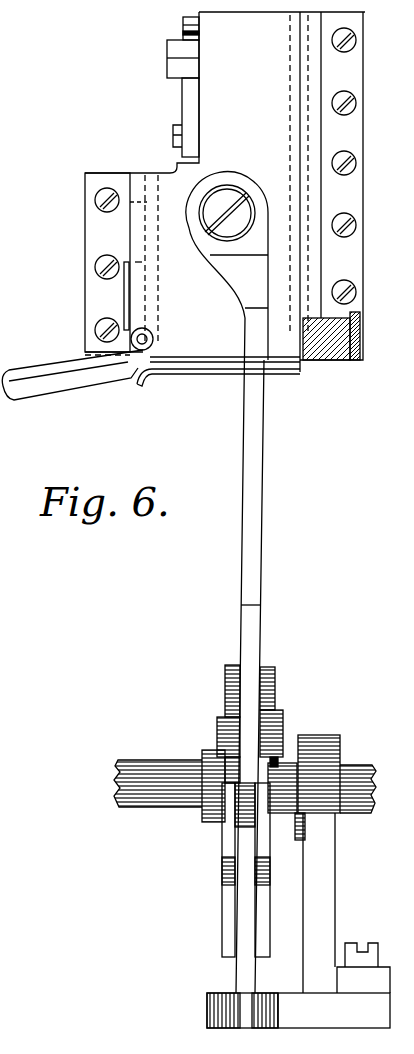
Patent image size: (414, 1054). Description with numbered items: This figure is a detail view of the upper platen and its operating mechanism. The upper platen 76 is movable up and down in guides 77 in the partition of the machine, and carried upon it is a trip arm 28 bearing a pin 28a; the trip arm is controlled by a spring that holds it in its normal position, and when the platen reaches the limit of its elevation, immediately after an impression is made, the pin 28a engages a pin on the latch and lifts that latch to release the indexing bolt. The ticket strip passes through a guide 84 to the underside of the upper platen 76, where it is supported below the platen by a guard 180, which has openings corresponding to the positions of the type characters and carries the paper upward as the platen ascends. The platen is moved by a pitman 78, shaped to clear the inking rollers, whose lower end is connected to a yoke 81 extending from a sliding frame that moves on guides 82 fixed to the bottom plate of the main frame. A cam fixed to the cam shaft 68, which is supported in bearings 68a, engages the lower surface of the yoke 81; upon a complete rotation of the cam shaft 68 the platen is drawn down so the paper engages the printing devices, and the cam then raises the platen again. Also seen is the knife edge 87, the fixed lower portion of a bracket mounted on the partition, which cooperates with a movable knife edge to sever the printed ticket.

The pin 28a is at (180, 63).
The trip arm 28 is at (188, 97).
The upper platen 76 is at (225, 192).
The guides 77 is at (90, 250).
The guide 84 is at (77, 387).
The guard 180 is at (203, 373).
The knife edge 87 is at (352, 362).
The pitman 78 is at (265, 432).
The yoke 81 is at (237, 683).
The cam shaft 68 is at (143, 765).
The guides 82 is at (230, 900).
The bearings 68a is at (325, 857).